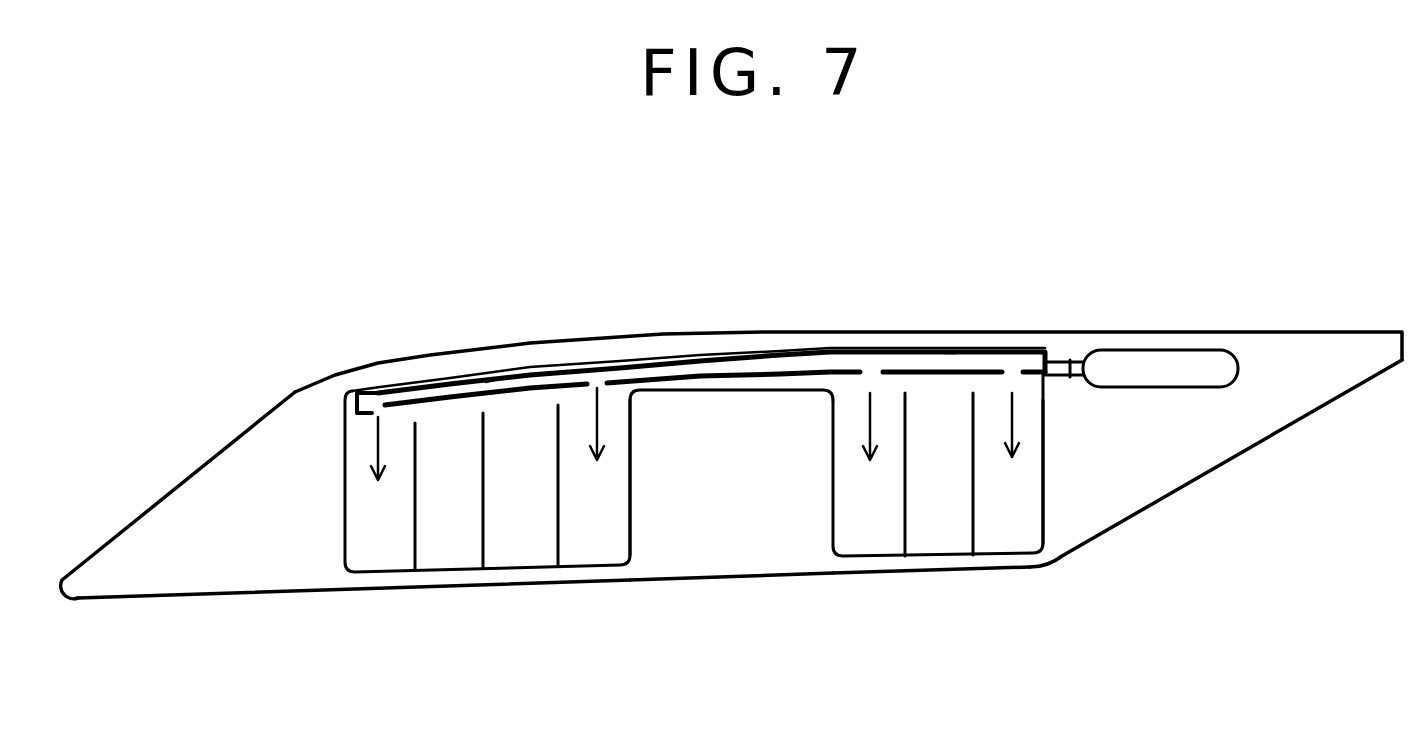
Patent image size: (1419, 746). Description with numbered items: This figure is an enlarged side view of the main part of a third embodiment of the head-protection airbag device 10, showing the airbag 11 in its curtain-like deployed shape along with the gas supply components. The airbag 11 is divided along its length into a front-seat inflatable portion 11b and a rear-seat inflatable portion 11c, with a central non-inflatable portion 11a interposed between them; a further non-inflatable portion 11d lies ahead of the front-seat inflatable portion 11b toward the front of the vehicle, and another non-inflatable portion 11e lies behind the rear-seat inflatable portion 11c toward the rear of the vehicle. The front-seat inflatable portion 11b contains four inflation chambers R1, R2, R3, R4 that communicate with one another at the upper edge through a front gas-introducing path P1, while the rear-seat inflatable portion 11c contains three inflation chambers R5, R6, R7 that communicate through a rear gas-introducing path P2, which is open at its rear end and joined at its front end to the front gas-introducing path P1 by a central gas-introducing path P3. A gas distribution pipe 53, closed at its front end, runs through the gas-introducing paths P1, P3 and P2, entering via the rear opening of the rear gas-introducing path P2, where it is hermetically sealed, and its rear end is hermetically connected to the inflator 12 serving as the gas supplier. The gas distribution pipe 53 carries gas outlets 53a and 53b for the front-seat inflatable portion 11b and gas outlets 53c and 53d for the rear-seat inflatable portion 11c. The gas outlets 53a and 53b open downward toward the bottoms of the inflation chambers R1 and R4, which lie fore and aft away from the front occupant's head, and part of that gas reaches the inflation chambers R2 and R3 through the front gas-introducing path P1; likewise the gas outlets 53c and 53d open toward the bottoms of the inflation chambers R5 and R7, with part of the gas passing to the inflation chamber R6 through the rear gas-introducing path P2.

The head-protection airbag device 10 is at (731, 457).
The airbag 11 is at (731, 502).
The central non-inflatable portion 11a is at (763, 577).
The front-seat inflatable portion 11b is at (495, 570).
The rear-seat inflatable portion 11c is at (912, 556).
The non-inflatable portion 11d is at (222, 573).
The non-inflatable portion 11e is at (1163, 497).
The inflator 12 is at (1148, 368).
The gas distribution pipe 53 is at (699, 360).
The gas outlet 53a is at (377, 413).
The gas outlet 53b is at (597, 382).
The gas outlet 53c is at (870, 377).
The gas outlet 53d is at (1012, 377).
The front gas-introducing path P1 is at (490, 378).
The rear gas-introducing path P2 is at (950, 352).
The central gas-introducing path P3 is at (665, 361).
The inflation chamber R1 is at (385, 558).
The inflation chamber R2 is at (450, 558).
The inflation chamber R3 is at (540, 558).
The inflation chamber R4 is at (605, 558).
The inflation chamber R5 is at (868, 548).
The inflation chamber R6 is at (945, 548).
The inflation chamber R7 is at (1010, 548).